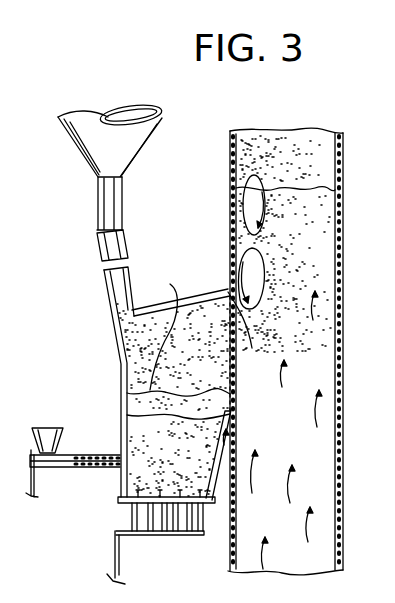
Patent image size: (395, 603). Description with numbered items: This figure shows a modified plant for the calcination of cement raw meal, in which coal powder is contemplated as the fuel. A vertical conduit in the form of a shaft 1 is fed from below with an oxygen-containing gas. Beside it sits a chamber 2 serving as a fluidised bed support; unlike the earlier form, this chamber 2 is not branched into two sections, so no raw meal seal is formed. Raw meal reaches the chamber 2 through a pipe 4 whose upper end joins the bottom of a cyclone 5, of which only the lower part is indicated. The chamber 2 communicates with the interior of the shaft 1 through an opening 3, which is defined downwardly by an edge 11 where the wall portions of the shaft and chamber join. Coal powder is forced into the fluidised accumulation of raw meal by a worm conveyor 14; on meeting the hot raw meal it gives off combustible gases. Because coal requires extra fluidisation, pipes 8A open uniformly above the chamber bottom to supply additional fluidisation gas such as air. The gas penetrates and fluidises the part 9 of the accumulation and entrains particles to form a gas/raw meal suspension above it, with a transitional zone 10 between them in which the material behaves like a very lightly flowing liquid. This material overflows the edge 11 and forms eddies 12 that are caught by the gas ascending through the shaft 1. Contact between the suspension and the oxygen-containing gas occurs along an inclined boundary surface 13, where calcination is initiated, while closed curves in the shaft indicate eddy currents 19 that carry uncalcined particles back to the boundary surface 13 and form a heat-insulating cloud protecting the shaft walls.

The shaft 1 is at (276, 351).
The chamber 2 is at (120, 372).
The opening 3 is at (228, 292).
The pipe 4 is at (102, 201).
The cyclone 5 is at (83, 133).
The pipes 8A is at (180, 522).
The part of the raw meal accumulation 9 is at (157, 437).
The transitional zone 10 is at (160, 331).
The edge 11 is at (233, 414).
The eddies 12 is at (230, 394).
The boundary surface 13 is at (335, 190).
The worm conveyor 14 is at (79, 468).
The eddy currents 19 is at (230, 187).